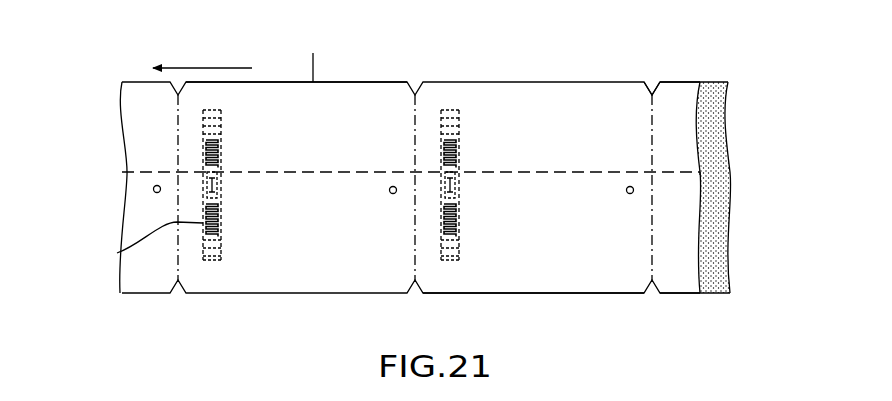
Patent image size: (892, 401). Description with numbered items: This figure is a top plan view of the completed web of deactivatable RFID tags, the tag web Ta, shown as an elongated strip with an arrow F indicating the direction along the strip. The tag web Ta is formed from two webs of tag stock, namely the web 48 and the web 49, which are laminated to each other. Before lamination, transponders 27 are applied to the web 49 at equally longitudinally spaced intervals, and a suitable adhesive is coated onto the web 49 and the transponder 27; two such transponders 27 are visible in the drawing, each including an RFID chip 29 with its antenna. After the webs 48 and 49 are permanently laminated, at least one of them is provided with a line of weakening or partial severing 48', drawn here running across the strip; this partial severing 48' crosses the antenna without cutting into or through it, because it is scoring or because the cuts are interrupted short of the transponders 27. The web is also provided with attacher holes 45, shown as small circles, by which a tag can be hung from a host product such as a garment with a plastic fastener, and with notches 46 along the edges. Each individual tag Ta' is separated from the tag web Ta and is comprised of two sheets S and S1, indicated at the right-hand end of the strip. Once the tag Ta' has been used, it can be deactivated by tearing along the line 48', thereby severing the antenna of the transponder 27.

The transponder 27 is at (222, 133).
The RFID chip 29 is at (117, 253).
The attacher holes 45 is at (393, 194).
The notch 46 is at (650, 103).
The web 48 is at (690, 154).
The line of weakening or partial severing 48' is at (336, 101).
The web 49 is at (327, 267).
The feed direction F is at (208, 63).
The sheet S is at (715, 100).
The sheet S1 is at (630, 153).
The deactivatable tag web Ta is at (416, 41).
The tag Ta' is at (533, 337).